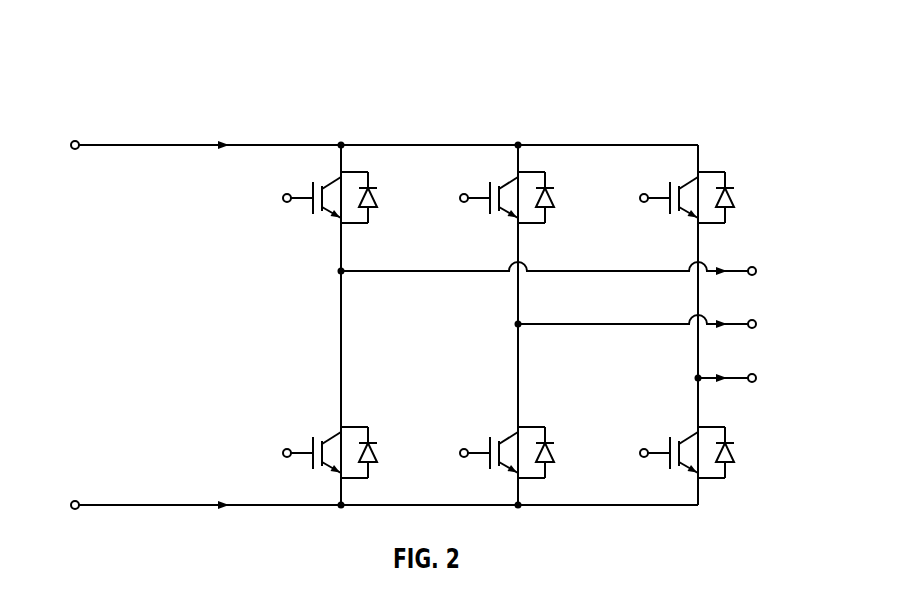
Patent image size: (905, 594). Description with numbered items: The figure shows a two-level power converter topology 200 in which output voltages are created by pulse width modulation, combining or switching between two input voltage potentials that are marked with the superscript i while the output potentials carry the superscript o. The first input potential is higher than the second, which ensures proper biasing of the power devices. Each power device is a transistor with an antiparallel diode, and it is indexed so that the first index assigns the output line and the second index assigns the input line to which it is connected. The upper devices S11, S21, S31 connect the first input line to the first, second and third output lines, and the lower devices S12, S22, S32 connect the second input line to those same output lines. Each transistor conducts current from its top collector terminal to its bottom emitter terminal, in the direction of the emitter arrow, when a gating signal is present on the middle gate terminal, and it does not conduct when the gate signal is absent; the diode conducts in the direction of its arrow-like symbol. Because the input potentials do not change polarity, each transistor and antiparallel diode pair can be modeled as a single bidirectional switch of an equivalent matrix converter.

The two-level power converter topology 200 is at (109, 65).
The power device S11 is at (353, 197).
The power device S21 is at (530, 197).
The power device S31 is at (710, 197).
The power device S12 is at (353, 452).
The power device S22 is at (530, 452).
The power device S32 is at (710, 452).